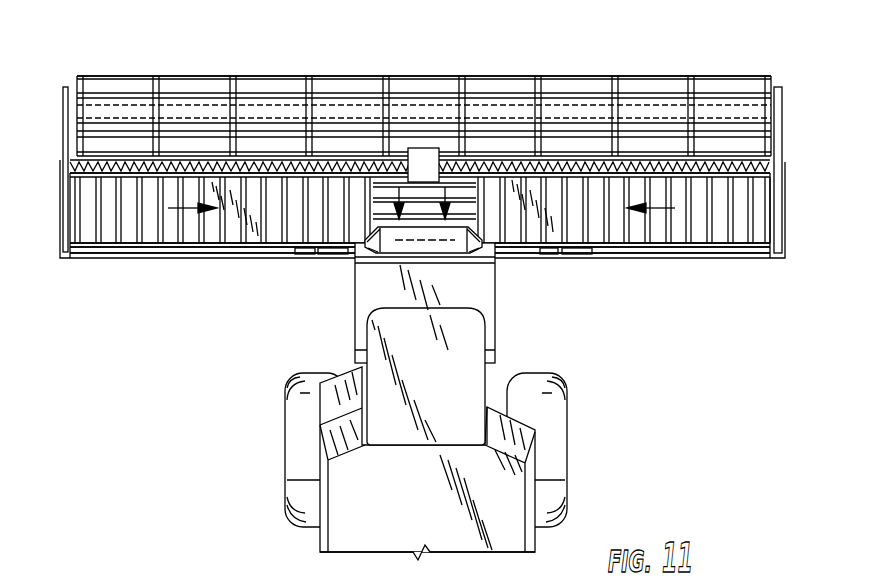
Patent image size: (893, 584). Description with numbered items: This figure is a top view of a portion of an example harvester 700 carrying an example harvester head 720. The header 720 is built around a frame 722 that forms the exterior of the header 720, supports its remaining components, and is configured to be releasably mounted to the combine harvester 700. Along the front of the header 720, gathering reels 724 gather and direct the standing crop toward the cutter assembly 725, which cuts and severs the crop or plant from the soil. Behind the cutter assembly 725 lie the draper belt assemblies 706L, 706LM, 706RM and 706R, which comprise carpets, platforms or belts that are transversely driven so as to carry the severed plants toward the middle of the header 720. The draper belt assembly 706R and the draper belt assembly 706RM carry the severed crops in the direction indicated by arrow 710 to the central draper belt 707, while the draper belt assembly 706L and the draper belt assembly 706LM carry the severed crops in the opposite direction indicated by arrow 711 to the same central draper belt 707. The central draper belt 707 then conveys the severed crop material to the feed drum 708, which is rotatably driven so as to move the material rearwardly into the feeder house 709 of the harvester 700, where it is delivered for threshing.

The harvester 700 is at (633, 386).
The draper belt assembly 706L is at (87, 228).
The draper belt assembly 706LM is at (257, 243).
The draper belt assembly 706RM is at (595, 243).
The draper belt assembly 706R is at (758, 215).
The central draper belt 707 is at (380, 212).
The feed drum 708 is at (452, 243).
The feeder house 709 is at (352, 296).
The arrow 710 is at (650, 210).
The arrow 711 is at (180, 207).
The harvester head 720 is at (770, 60).
The frame 722 is at (782, 137).
The gathering reels 724 is at (583, 75).
The cutter assembly 725 is at (650, 160).